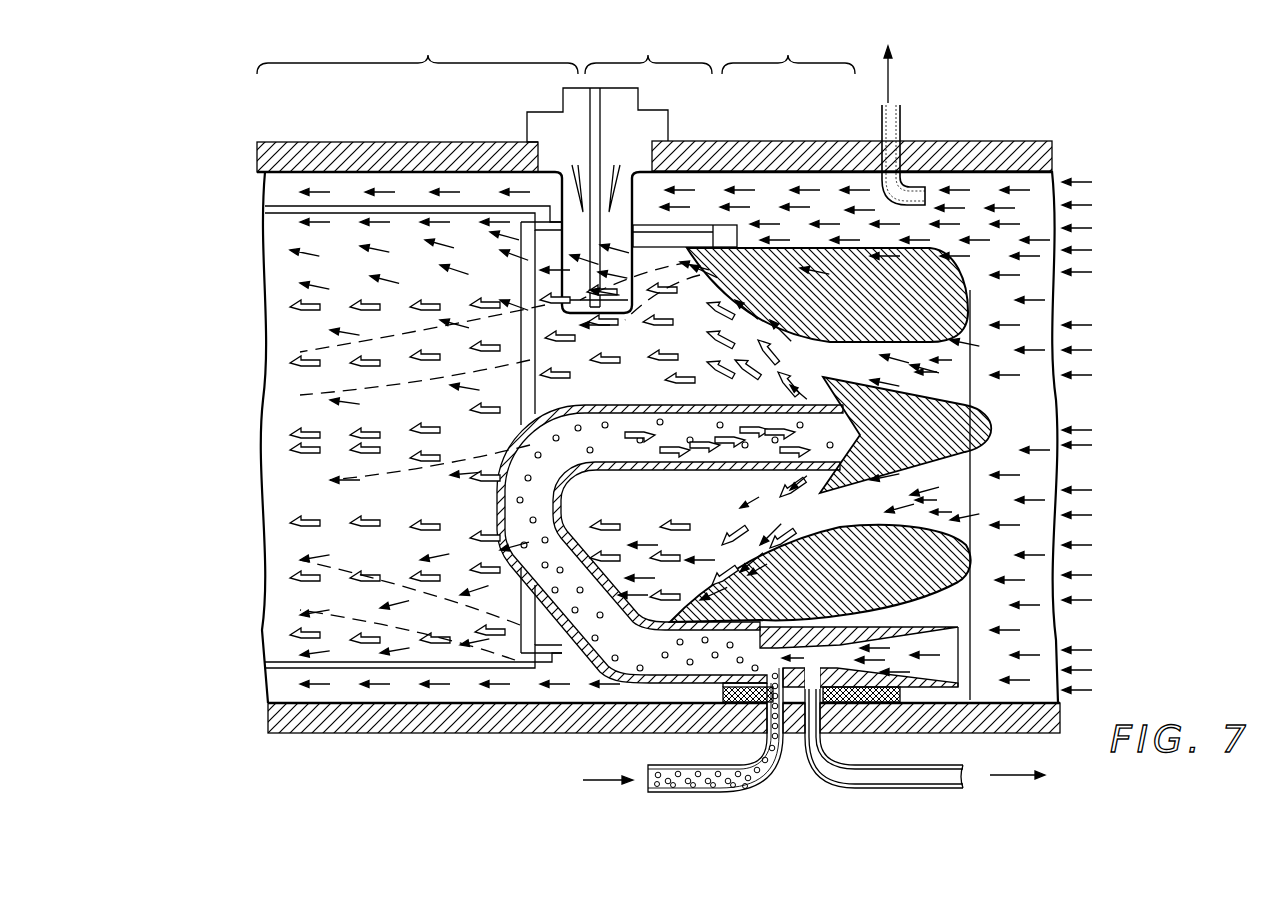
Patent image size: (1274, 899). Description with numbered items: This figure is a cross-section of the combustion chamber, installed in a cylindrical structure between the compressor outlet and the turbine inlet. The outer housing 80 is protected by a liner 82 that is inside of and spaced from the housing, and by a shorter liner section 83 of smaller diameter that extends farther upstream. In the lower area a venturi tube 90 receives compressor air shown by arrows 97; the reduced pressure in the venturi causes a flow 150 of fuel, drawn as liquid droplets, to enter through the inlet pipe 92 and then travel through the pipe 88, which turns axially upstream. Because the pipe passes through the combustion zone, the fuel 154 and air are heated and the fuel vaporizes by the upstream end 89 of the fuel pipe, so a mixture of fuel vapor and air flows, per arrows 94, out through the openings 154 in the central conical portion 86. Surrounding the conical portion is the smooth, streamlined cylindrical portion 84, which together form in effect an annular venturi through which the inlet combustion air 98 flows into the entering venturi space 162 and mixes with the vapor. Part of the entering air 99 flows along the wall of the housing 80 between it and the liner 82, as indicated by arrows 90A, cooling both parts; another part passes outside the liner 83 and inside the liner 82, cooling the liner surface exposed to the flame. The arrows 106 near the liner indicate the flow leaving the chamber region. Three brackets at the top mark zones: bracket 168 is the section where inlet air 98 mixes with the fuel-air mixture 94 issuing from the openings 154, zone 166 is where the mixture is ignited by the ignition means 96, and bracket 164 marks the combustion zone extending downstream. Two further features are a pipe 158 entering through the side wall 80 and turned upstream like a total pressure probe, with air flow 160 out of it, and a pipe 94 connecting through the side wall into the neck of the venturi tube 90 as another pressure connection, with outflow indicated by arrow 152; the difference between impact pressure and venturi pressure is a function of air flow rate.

The outer housing 80 is at (448, 142).
The liner 82 is at (398, 205).
The liner section 83 is at (690, 222).
The cylindrical portion 84 is at (935, 300).
The central conical portion 86 is at (995, 428).
The pipe 88 is at (497, 505).
The upstream end of fuel pipe 89 is at (655, 405).
The venturi tube 90 is at (947, 670).
The air flow arrows 90A is at (324, 193).
The inlet pipe 92 is at (758, 788).
The fuel vapor and air mixture arrows / pressure pipe 94 is at (735, 430).
The ignition means 96 is at (650, 112).
The venturi inlet air arrows 97 is at (1095, 690).
The inlet combustion air arrows 98 is at (1092, 380).
The entering air arrows 99 is at (1100, 250).
The outlet air flow 106 is at (292, 360).
The fuel flow 150 is at (610, 787).
The outlet flow from pipe 94 152 is at (1022, 778).
The openings 154 is at (772, 395).
The pipe 158 is at (903, 127).
The air flow arrow 160 is at (893, 97).
The entering venturi space 162 is at (955, 357).
The combustion zone bracket 164 is at (417, 48).
The ignition zone 166 is at (648, 48).
The mixing section bracket 168 is at (788, 48).